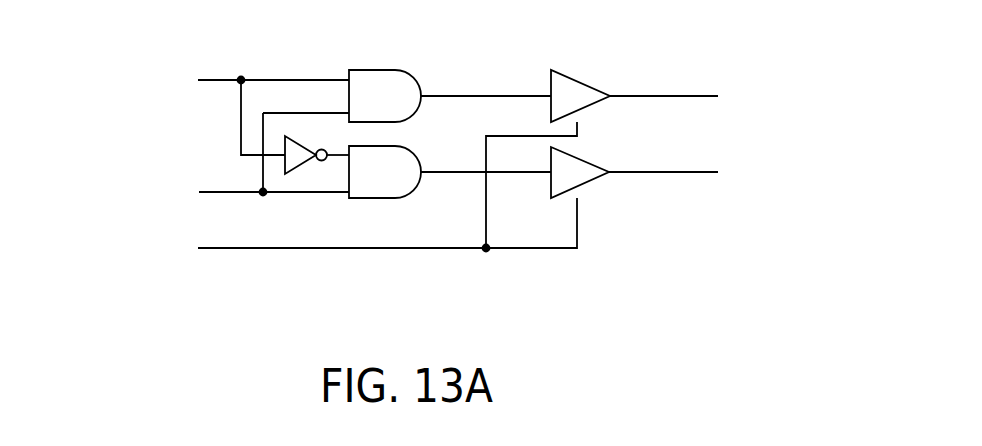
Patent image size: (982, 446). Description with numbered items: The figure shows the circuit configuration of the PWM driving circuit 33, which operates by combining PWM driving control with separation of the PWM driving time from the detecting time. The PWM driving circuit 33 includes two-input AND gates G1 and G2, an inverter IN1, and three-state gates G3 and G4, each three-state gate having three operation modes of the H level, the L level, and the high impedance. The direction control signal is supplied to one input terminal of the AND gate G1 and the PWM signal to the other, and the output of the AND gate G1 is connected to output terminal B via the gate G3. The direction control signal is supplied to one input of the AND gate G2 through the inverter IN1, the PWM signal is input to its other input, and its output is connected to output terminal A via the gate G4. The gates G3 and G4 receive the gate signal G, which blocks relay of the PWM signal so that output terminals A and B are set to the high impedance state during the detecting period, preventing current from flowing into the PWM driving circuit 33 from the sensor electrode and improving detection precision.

The PWM driving circuit 33 is at (440, 66).
The two-input AND gate G1 is at (372, 70).
The two-input AND gate G2 is at (422, 147).
The three-state gate G3 is at (593, 82).
The three-state gate G4 is at (593, 160).
The inverter IN1 is at (305, 162).